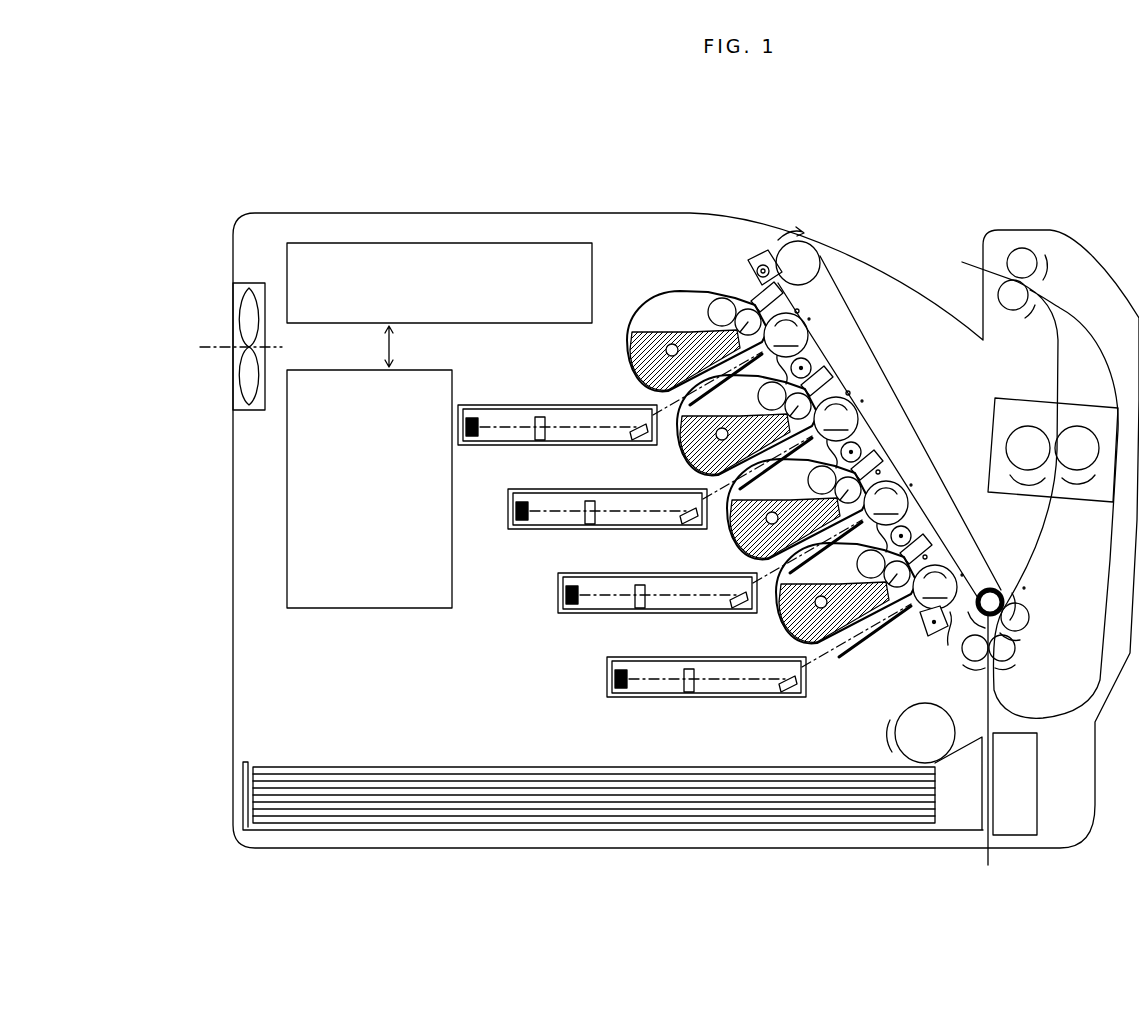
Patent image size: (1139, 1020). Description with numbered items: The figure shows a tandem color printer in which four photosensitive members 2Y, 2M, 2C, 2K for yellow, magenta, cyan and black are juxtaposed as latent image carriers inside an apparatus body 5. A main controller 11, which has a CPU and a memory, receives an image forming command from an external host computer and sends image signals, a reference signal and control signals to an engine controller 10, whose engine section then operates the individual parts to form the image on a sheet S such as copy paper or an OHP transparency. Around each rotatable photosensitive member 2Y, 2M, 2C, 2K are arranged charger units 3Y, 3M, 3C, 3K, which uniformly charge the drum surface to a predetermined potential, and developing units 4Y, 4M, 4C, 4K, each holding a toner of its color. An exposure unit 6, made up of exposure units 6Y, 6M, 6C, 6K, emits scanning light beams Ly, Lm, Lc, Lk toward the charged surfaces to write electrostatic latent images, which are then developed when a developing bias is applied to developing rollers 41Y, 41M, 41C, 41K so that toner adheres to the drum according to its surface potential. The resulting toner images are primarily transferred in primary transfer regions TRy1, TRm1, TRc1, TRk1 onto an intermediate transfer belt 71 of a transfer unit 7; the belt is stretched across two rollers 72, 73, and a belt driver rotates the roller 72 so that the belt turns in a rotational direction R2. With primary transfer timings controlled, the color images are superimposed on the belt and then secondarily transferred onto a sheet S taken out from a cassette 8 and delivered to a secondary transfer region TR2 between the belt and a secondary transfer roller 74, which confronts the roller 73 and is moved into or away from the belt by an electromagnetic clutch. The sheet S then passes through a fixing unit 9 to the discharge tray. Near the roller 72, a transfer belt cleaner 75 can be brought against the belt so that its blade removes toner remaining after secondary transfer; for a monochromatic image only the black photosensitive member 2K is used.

The apparatus body 5 is at (589, 212).
The main controller 11 is at (401, 243).
The engine controller 10 is at (350, 610).
The exposure unit 6 is at (518, 690).
The exposure unit 6Y is at (478, 447).
The exposure unit 6M is at (528, 531).
The exposure unit 6C is at (578, 615).
The exposure unit 6K is at (627, 699).
The scanning light beam Ly is at (667, 417).
The scanning light beam Lm is at (717, 501).
The scanning light beam Lc is at (767, 585).
The scanning light beam Lk is at (826, 688).
The developing unit 4Y is at (628, 340).
The developing unit 4M is at (678, 420).
The developing unit 4C is at (814, 655).
The developing unit 4K is at (847, 661).
The photosensitive member 2Y is at (786, 335).
The photosensitive member 2M is at (836, 419).
The photosensitive member 2C is at (886, 503).
The photosensitive member 2K is at (935, 587).
The charger unit 3Y is at (821, 349).
The charger unit 3M is at (870, 432).
The charger unit 3C is at (935, 509).
The charger unit 3K is at (947, 632).
The transfer unit 7 is at (790, 206).
The intermediate transfer belt 71 is at (840, 290).
The roller 72 is at (800, 258).
The roller 73 is at (995, 591).
The secondary transfer roller 74 is at (1025, 624).
The transfer belt cleaner 75 is at (742, 262).
The rotational direction R2 is at (771, 238).
The developing roller 41Y is at (797, 310).
The developing roller 41M is at (848, 392).
The developing roller 41C is at (878, 470).
The developing roller 41K is at (925, 555).
The primary transfer region TRy1 is at (818, 322).
The primary transfer region TRm1 is at (871, 405).
The primary transfer region TRc1 is at (920, 488).
The primary transfer region TRk1 is at (970, 578).
The secondary transfer region TR2 is at (1034, 591).
The fixing unit 9 is at (1035, 398).
The cassette 8 is at (243, 795).
The sheet S is at (362, 767).